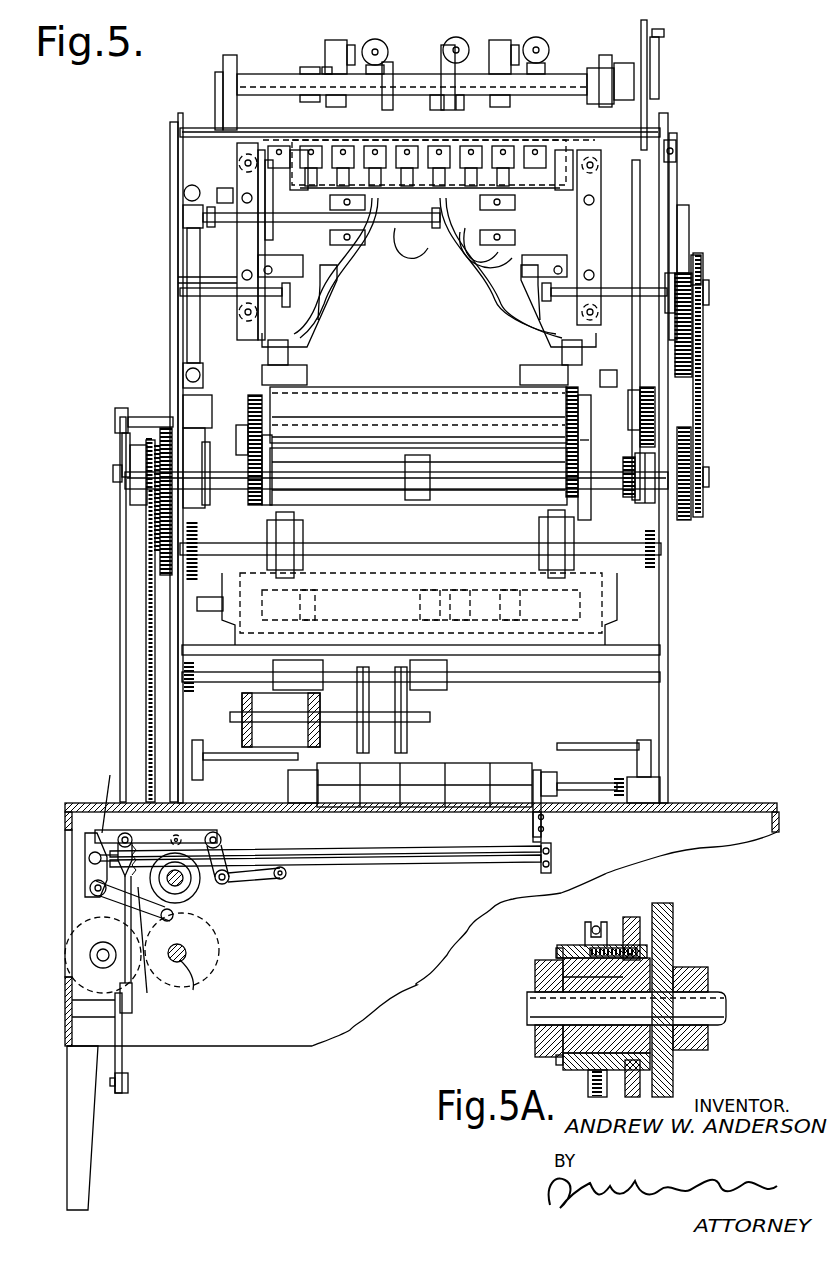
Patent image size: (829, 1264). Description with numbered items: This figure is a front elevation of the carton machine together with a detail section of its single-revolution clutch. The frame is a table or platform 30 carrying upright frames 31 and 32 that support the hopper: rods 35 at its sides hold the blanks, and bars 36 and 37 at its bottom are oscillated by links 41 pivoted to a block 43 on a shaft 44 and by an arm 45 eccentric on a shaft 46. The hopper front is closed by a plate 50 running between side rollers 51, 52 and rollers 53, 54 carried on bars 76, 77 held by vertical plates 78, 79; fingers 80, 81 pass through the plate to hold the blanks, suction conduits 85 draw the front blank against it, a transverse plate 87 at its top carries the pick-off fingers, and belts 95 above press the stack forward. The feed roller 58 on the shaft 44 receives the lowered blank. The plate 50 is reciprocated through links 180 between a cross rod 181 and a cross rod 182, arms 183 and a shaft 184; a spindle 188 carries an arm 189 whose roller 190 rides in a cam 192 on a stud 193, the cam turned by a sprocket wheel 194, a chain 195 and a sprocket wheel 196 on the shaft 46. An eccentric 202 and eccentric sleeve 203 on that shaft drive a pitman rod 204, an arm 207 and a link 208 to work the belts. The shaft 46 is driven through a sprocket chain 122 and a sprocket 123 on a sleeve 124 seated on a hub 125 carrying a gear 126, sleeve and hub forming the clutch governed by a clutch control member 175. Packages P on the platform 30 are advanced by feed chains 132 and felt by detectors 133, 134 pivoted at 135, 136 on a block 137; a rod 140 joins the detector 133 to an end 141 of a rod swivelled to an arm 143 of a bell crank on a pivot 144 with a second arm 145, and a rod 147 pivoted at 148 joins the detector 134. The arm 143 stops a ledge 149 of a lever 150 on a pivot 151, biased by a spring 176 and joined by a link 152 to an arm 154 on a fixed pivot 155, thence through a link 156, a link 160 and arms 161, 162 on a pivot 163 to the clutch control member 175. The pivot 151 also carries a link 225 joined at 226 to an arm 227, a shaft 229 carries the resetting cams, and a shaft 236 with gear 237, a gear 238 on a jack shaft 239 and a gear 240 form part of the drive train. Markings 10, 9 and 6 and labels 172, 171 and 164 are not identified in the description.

In FIG. 5, the section line 10 is at (440, 17).
In FIG. 5, the section line 9 is at (748, 48).
In FIG. 5, the section line 6 is at (85, 830).
In FIG. 5, the upright frame 31 is at (668, 636).
In FIG. 5, the transverse plate 87 is at (558, 155).
In FIG. 5, the vertical plate 79 is at (228, 70).
In FIG. 5, the shaft 184 is at (556, 78).
In FIG. 5, the vertical plate 78 is at (608, 58).
In FIG. 5, the arm of bell crank lever 207 is at (648, 33).
In FIG. 5, the link 208 is at (660, 70).
In FIG. 5, the belts 95 is at (332, 48).
In FIG. 5, the arms 183 is at (448, 80).
In FIG. 5, the cross rod 182 is at (420, 100).
In FIG. 5, the links 180 is at (470, 105).
In FIG. 5, the side roller 52 is at (240, 160).
In FIG. 5, the side roller 51 is at (598, 176).
In FIG. 5, the roller 53 is at (298, 188).
In FIG. 5, the bar 76 is at (252, 232).
In FIG. 5, the bar 77 is at (591, 228).
In FIG. 5, the finger 81 is at (292, 296).
In FIG. 5, the roller 54 is at (288, 268).
In FIG. 5, the conduits 85 is at (312, 322).
In FIG. 5, the plate 50 is at (404, 262).
In FIG. 5, the cross rod 181 is at (445, 252).
In FIG. 5, the finger 80 is at (515, 302).
In FIG. 5, the rods 35 is at (424, 352).
In FIG. 5, the bar 37 is at (300, 375).
In FIG. 5, the bar 36 is at (528, 375).
In FIG. 5, the blank feeding roller 58 is at (412, 398).
In FIG. 5, the shaft 46 is at (233, 488).
In FIG. 5A, the shaft 46 is at (540, 1003).
In FIG. 5, the links 41 is at (248, 388).
In FIG. 5, the block 43 is at (265, 412).
In FIG. 5, the shaft 44 is at (244, 428).
In FIG. 5, the arm 45 is at (258, 447).
In FIG. 5, the gear 172 is at (656, 402).
In FIG. 5, the hub 171 is at (652, 440).
In FIG. 5, the eccentric 202 is at (626, 492).
In FIG. 5, the eccentric sleeve 203 is at (640, 503).
In FIG. 5, the pitman rod 204 is at (640, 368).
In FIG. 5, the gear 164 is at (690, 450).
In FIG. 5, the sprocket wheel 196 is at (706, 490).
In FIG. 5, the chain 195 is at (700, 335).
In FIG. 5, the sprocket wheel 194 is at (702, 265).
In FIG. 5, the stud 193 is at (710, 290).
In FIG. 5, the cam 192 is at (690, 216).
In FIG. 5, the roller 190 is at (676, 262).
In FIG. 5, the arm 189 is at (678, 185).
In FIG. 5, the spindle 188 is at (680, 150).
In FIG. 5, the pivot 163 is at (113, 420).
In FIG. 5, the arm 161 is at (128, 410).
In FIG. 5, the arm 162 is at (122, 455).
In FIG. 5, the clutch control member 175 is at (113, 476).
In FIG. 5, the hub 125 is at (130, 495).
In FIG. 5A, the hub 125 is at (535, 975).
In FIG. 5, the sprocket 123 is at (145, 443).
In FIG. 5A, the sprocket 123 is at (598, 921).
In FIG. 5, the sleeve 124 is at (156, 440).
In FIG. 5A, the sleeve 124 is at (575, 948).
In FIG. 5, the gear 126 is at (166, 430).
In FIG. 5A, the gear 126 is at (636, 916).
In FIG. 5, the sprocket chain 122 is at (146, 538).
In FIG. 5A, the sprocket chain 122 is at (585, 934).
In FIG. 5, the link 160 is at (120, 594).
In FIG. 5, the upright frame 32 is at (182, 632).
In FIG. 5A, the upright frame 32 is at (676, 924).
In FIG. 5, the feed chains 132 is at (408, 730).
In FIG. 5, the packages P is at (476, 778).
In FIG. 5, the detector finger 133 is at (540, 778).
In FIG. 5, the detector finger 134 is at (533, 792).
In FIG. 5, the pivot 135 is at (538, 818).
In FIG. 5, the pivot 136 is at (538, 830).
In FIG. 5, the block 137 is at (545, 838).
In FIG. 5, the platform 30 is at (680, 803).
In FIG. 5, the arm 143 is at (90, 847).
In FIG. 5, the end of rod 141 is at (90, 861).
In FIG. 5, the pivot 144 is at (90, 890).
In FIG. 5, the arm 145 is at (110, 905).
In FIG. 5, the lever 150 is at (158, 835).
In FIG. 5, the pivot 151 is at (225, 826).
In FIG. 5, the link 225 is at (225, 872).
In FIG. 5, the connection 226 is at (272, 835).
In FIG. 5, the arm 227 is at (290, 876).
In FIG. 5, the shaft 229 is at (184, 884).
In FIG. 5, the gear 240 is at (222, 930).
In FIG. 5, the gear 238 is at (215, 968).
In FIG. 5, the jack shaft 239 is at (195, 986).
In FIG. 5, the link 152 is at (85, 932).
In FIG. 5, the gear 237 is at (90, 958).
In FIG. 5, the shaft 236 is at (98, 958).
In FIG. 5, the spring 176 is at (143, 998).
In FIG. 5, the arm 154 is at (122, 1030).
In FIG. 5, the link 156 is at (128, 1080).
In FIG. 5, the fixed pivot 155 is at (88, 1005).
In FIG. 5, the link or rod 140 is at (350, 850).
In FIG. 5, the link or rod 147 is at (395, 866).
In FIG. 5, the pivot 148 is at (540, 870).
In FIG. 5, the ledge 149 is at (116, 872).